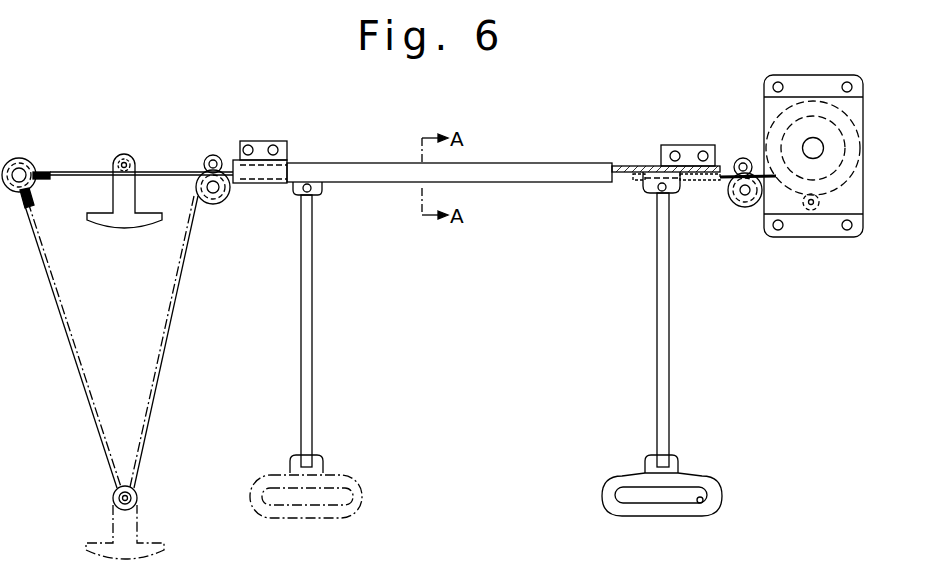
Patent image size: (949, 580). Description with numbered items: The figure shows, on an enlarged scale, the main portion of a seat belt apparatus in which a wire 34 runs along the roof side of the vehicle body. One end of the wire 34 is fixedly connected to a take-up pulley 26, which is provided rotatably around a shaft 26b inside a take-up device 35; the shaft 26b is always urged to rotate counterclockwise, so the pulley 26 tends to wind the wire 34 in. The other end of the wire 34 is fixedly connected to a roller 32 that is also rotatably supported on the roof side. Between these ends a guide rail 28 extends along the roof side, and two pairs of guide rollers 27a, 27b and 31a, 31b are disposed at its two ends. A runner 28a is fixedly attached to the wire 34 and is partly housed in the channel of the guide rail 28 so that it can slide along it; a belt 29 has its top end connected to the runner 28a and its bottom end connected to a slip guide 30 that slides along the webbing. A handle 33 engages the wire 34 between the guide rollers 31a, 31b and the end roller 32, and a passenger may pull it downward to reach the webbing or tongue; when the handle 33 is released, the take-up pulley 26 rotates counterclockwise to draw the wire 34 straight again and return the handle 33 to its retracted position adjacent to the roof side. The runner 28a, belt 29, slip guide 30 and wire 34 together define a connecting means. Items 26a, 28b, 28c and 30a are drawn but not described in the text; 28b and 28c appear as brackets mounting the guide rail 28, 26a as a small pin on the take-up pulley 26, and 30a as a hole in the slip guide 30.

The take-up pulley 26 is at (860, 131).
The drum pin 26a is at (818, 203).
The shaft 26b is at (816, 148).
The guide roller 27a is at (741, 157).
The guide roller 27b is at (744, 208).
The guide rail 28 is at (523, 163).
The runner 28a is at (650, 193).
The rod bracket 28b is at (688, 146).
The rod bracket 28c is at (262, 141).
The belt 29 is at (670, 331).
The slip guide 30 is at (715, 489).
The hanger hole 30a is at (702, 503).
The guide roller 31a is at (213, 154).
The guide roller 31b is at (224, 201).
The roller 32 is at (14, 160).
The handle 33 is at (124, 226).
The wire 34 is at (165, 170).
The take-up device 35 is at (820, 75).